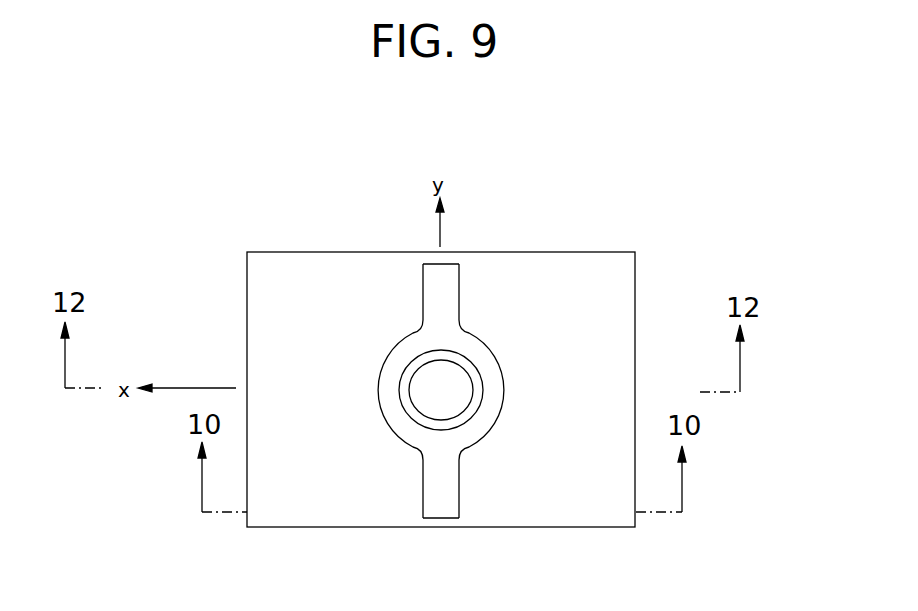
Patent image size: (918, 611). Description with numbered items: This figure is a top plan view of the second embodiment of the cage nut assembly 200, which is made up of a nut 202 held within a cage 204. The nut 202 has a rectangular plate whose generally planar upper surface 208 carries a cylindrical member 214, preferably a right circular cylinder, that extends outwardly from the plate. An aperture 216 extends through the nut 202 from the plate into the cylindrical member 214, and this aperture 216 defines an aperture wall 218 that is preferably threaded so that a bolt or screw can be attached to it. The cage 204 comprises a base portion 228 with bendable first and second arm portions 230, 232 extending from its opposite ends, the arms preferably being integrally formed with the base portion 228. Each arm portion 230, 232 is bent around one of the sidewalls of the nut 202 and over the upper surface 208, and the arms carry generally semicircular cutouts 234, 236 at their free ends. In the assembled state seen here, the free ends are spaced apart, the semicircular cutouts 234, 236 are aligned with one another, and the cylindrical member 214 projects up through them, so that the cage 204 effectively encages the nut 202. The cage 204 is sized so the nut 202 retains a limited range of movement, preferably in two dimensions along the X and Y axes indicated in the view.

The cage nut assembly 200 is at (716, 272).
The nut 202 is at (448, 284).
The cage 204 is at (618, 314).
The upper surface 208 is at (443, 492).
The cylindrical member 214 is at (477, 386).
The aperture 216 is at (445, 380).
The aperture wall 218 is at (412, 378).
The base portion 228 is at (427, 252).
The first arm portion 230 is at (613, 267).
The second arm portion 232 is at (287, 285).
The semicircular cutout 234 is at (472, 350).
The semicircular cutout 236 is at (400, 357).